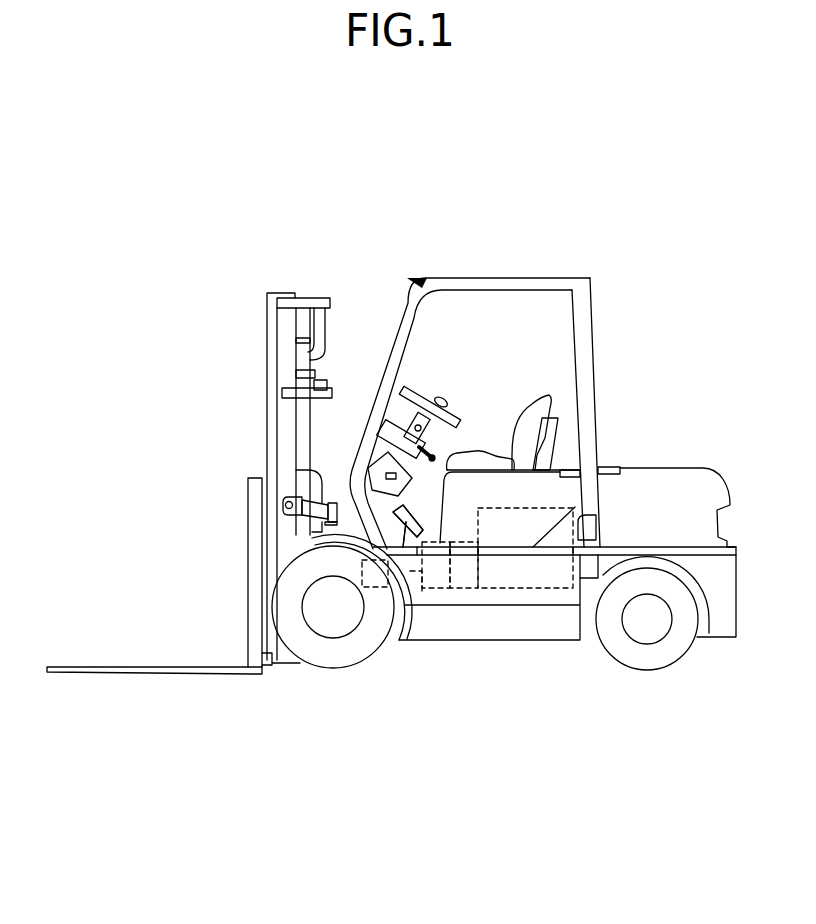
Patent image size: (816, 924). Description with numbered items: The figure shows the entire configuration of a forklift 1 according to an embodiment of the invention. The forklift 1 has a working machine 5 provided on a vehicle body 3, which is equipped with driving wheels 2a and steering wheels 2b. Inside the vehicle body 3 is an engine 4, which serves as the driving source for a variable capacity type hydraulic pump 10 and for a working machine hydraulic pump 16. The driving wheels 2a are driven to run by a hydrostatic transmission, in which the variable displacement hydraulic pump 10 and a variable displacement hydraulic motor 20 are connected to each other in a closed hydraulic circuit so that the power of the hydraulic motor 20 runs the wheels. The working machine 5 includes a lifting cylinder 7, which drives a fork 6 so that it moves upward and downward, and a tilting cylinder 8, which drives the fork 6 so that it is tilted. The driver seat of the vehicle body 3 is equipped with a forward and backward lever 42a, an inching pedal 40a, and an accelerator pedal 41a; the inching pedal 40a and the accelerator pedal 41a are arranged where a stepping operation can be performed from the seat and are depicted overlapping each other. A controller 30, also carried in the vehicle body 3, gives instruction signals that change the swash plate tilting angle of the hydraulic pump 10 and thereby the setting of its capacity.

The forklift 1 is at (391, 450).
The driving wheels 2a is at (332, 667).
The steering wheels 2b is at (646, 668).
The vehicle body 3 is at (473, 627).
The engine 4 is at (532, 590).
The working machine 5 is at (283, 407).
The fork 6 is at (97, 665).
The lifting cylinder 7 is at (302, 423).
The tilting cylinder 8 is at (302, 494).
The variable capacity type hydraulic pump 10 is at (433, 590).
The working machine hydraulic pump 16 is at (458, 590).
The variable displacement hydraulic motor 20 is at (388, 603).
The controller 30 is at (383, 588).
The inching pedal 40a is at (393, 513).
The accelerator pedal 41a is at (408, 526).
The forward and backward lever 42a is at (430, 412).